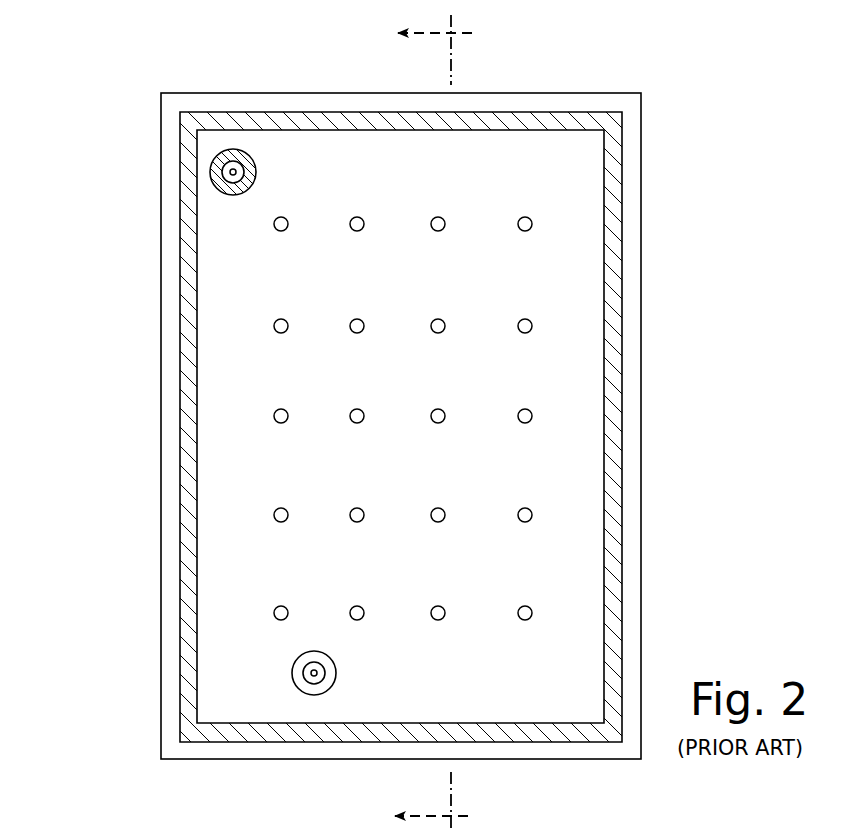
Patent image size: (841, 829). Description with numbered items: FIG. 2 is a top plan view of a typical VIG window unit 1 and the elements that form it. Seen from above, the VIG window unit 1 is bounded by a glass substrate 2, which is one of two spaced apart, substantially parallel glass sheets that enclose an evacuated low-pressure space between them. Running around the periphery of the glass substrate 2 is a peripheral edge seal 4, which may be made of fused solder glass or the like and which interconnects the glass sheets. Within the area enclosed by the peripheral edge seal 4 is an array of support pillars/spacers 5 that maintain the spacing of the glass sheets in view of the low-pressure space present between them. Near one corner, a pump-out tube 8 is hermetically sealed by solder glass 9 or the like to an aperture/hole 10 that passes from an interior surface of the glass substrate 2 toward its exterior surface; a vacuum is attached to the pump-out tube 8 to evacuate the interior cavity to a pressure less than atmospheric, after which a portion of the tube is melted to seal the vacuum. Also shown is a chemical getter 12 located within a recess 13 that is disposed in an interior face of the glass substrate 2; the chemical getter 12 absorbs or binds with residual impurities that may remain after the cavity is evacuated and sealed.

The VIG window unit 1 is at (146, 633).
The glass substrate 2 is at (395, 102).
The peripheral edge seal 4 is at (305, 118).
The support pillars/spacers 5 is at (533, 325).
The pump-out tube 8 is at (212, 168).
The solder glass 9 is at (235, 196).
The aperture/hole 10 is at (230, 173).
The chemical getter 12 is at (311, 677).
The recess 13 is at (322, 672).